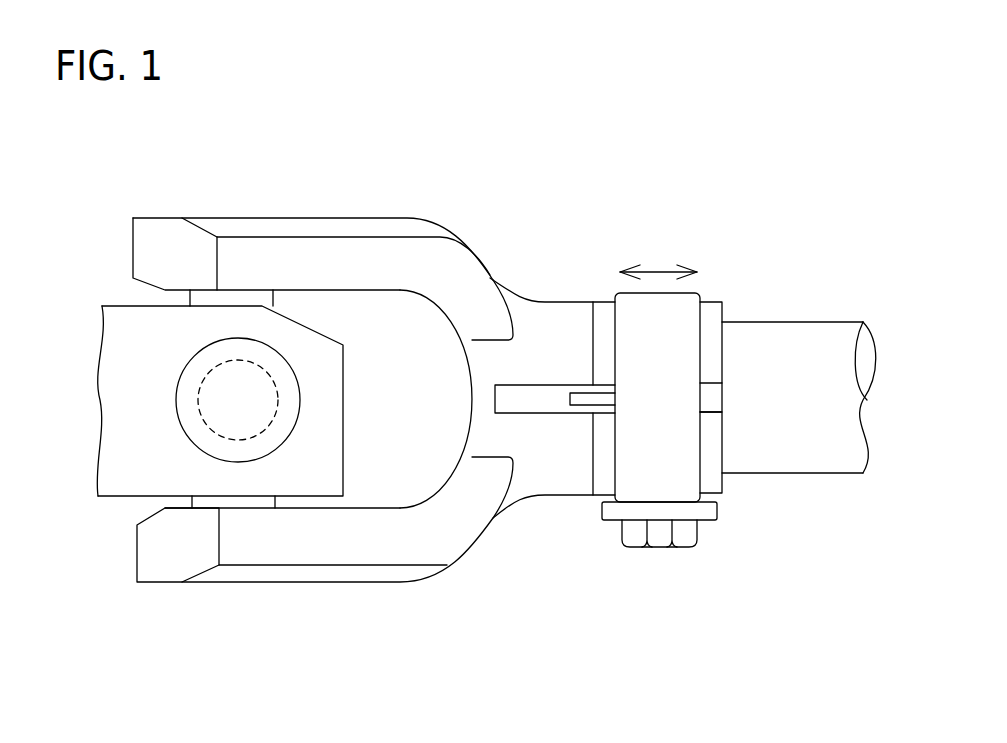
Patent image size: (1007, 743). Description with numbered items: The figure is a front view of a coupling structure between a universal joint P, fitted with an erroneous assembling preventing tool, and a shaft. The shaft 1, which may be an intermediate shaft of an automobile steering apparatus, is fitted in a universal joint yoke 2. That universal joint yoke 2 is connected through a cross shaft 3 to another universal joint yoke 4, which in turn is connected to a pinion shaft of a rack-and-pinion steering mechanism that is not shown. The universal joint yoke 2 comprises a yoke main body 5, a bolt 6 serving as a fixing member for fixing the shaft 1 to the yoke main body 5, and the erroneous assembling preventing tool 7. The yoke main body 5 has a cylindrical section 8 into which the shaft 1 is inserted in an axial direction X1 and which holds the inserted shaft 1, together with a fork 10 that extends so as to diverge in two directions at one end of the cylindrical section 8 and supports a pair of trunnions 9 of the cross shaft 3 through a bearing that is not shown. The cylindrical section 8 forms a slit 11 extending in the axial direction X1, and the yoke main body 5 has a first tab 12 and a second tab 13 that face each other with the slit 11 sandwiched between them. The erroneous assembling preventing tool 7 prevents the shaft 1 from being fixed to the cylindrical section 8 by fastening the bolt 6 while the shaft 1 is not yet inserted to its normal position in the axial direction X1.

The shaft 1 is at (818, 340).
The universal joint yoke 2 is at (323, 344).
The cross shaft 3 is at (205, 426).
The other universal joint yoke 4 is at (195, 401).
The yoke main body 5 is at (323, 234).
The bolt 6 is at (660, 547).
The erroneous assembling preventing tool 7 is at (695, 382).
The cylindrical section 8 is at (552, 374).
The trunnions 9 is at (277, 298).
The fork 10 is at (262, 243).
The slit 11 is at (530, 400).
The first tab 12 is at (713, 430).
The second tab 13 is at (713, 363).
The universal joint P is at (739, 340).
The axial direction X1 is at (658, 270).